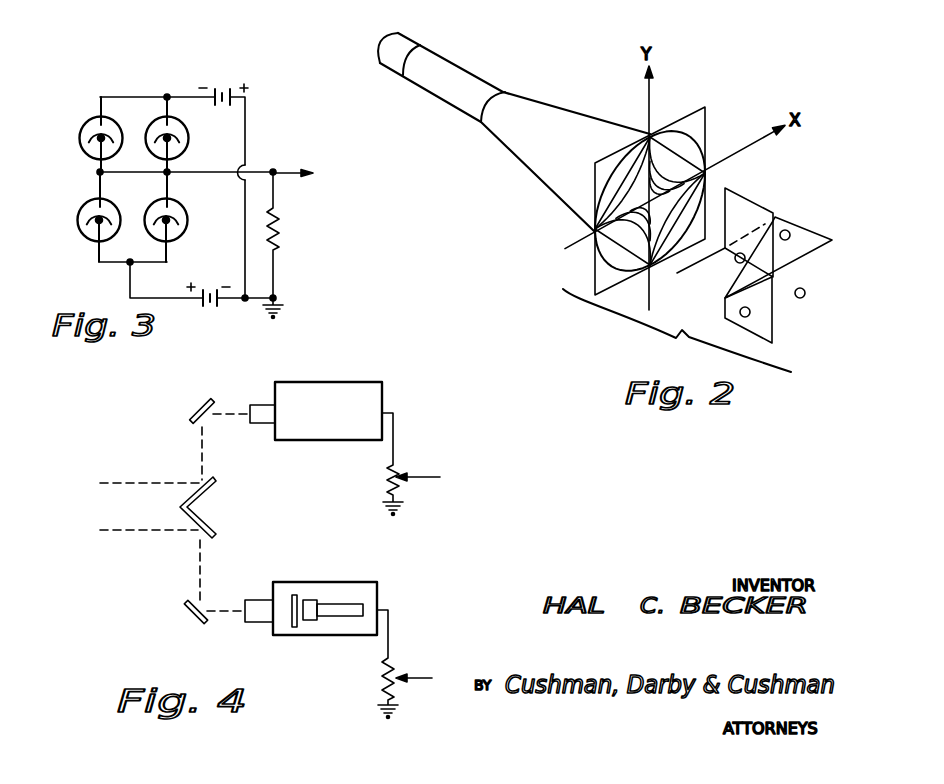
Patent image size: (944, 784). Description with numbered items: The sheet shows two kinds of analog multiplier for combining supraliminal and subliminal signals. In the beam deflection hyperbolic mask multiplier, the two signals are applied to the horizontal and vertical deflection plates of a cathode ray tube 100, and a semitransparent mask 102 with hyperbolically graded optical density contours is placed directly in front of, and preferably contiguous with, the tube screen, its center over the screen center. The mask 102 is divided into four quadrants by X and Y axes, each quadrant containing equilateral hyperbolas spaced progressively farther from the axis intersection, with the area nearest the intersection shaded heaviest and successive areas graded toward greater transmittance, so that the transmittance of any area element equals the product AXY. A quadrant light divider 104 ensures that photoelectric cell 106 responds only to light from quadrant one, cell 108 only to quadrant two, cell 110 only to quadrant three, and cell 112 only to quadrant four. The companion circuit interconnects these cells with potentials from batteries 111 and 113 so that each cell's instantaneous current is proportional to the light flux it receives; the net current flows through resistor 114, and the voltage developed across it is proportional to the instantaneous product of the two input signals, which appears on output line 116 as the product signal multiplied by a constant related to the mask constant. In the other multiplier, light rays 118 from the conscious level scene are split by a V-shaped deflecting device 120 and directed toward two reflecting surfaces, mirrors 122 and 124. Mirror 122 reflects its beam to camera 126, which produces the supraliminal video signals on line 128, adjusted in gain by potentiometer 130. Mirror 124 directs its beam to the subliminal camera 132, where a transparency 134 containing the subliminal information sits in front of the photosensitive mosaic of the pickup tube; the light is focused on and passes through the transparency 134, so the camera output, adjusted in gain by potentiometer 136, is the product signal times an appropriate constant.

In FIG. 2, the cathode ray tube 100 is at (506, 91).
In FIG. 2, the semitransparent mask 102 is at (680, 120).
In FIG. 2, the quadrant light divider 104 is at (753, 203).
In FIG. 3, the photoelectric cell 106 is at (84, 209).
In FIG. 2, the photoelectric cell 106 is at (789, 231).
In FIG. 3, the photoelectric cell 108 is at (86, 128).
In FIG. 2, the photoelectric cell 108 is at (743, 263).
In FIG. 3, the photoelectric cell 110 is at (207, 230).
In FIG. 2, the photoelectric cell 110 is at (740, 311).
In FIG. 3, the battery 111 is at (222, 88).
In FIG. 2, the photoelectric cell 112 is at (799, 298).
In FIG. 3, the battery 113 is at (220, 311).
In FIG. 3, the resistor 114 is at (283, 226).
In FIG. 3, the output line 116 is at (284, 172).
In FIG. 4, the light rays 118 is at (157, 530).
In FIG. 4, the V-shaped deflecting device 120 is at (207, 497).
In FIG. 4, the mirror 122 is at (194, 409).
In FIG. 4, the mirror 124 is at (188, 616).
In FIG. 4, the camera 126 is at (326, 382).
In FIG. 4, the line 128 is at (425, 476).
In FIG. 4, the potentiometer 130 is at (387, 478).
In FIG. 4, the subliminal camera 132 is at (273, 590).
In FIG. 4, the transparency 134 is at (292, 612).
In FIG. 4, the potentiometer 136 is at (397, 664).